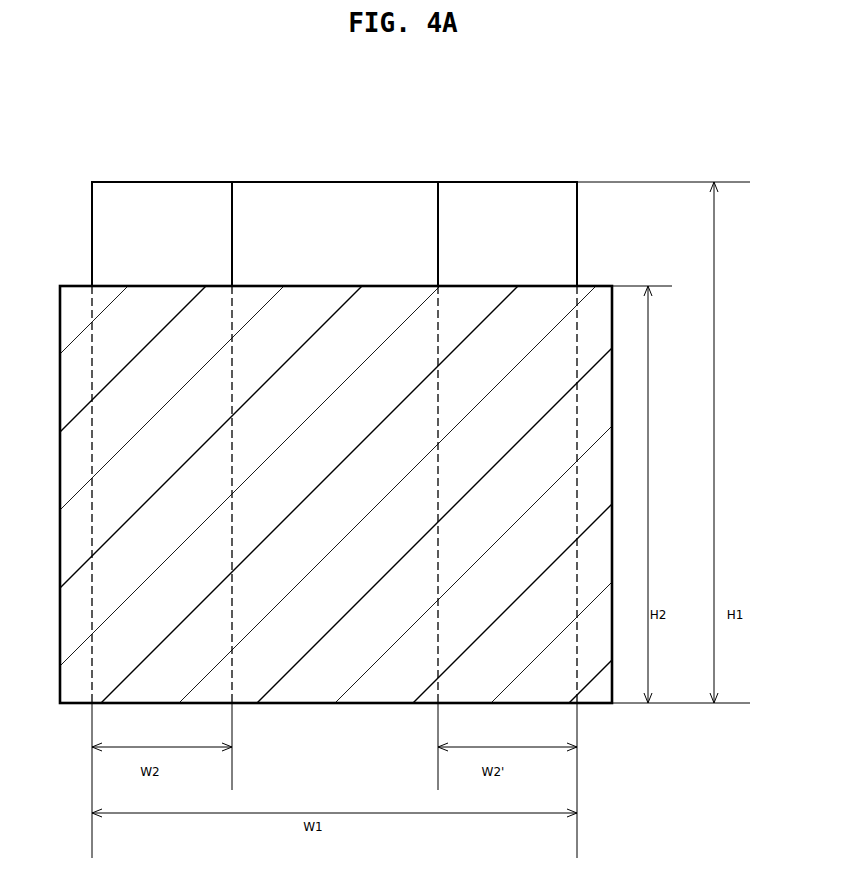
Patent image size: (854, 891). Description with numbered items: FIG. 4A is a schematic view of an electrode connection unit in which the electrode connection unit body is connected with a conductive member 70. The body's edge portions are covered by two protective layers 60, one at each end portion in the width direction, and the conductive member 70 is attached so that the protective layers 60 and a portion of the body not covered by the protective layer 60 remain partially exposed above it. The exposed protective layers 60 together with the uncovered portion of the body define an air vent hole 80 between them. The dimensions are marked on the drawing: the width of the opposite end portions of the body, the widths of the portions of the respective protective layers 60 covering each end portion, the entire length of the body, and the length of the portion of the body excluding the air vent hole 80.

The protective layer 60 is at (163, 233).
The conductive member 70 is at (548, 493).
The air vent hole 80 is at (337, 233).